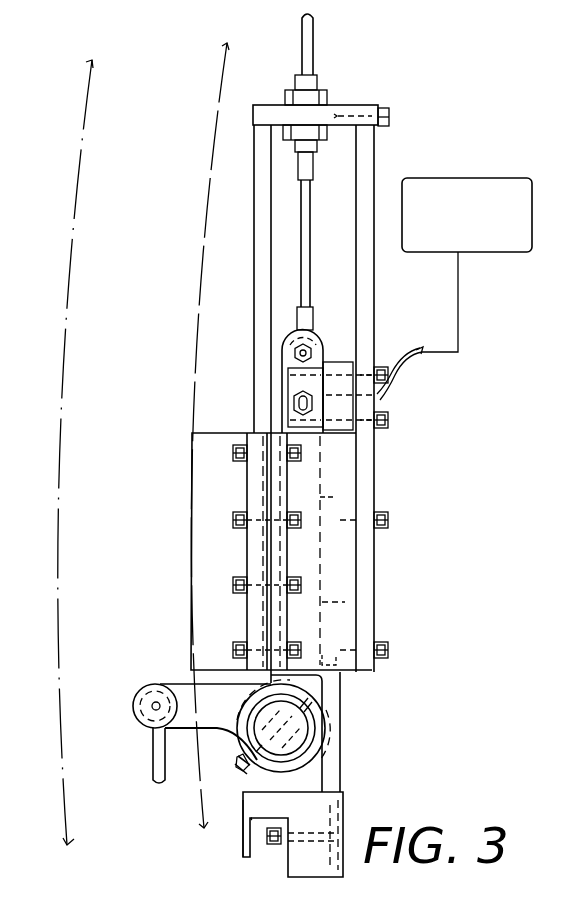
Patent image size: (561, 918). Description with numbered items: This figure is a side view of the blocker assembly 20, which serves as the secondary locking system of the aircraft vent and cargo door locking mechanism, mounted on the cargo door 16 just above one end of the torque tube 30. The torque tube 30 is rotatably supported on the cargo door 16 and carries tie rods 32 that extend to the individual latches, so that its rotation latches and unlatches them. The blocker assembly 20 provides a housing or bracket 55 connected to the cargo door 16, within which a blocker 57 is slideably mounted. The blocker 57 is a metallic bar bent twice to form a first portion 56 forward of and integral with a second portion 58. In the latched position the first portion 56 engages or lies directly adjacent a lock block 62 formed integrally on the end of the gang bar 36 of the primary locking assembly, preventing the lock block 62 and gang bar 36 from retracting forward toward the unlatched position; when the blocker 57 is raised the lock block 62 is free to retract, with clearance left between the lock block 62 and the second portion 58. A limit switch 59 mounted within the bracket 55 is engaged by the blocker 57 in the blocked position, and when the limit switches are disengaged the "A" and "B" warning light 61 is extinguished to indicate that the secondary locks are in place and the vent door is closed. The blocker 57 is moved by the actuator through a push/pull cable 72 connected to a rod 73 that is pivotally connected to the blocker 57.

The cargo door 16 is at (136, 455).
The blocker assembly 20 is at (424, 308).
The torque tube 30 is at (310, 774).
The tie rod 32 is at (153, 758).
The gang bar 36 is at (242, 828).
The housing or bracket 55 is at (372, 453).
The first portion 56 is at (304, 563).
The blocker 57 is at (324, 500).
The second portion 58 is at (340, 693).
The limit switch 59 is at (292, 400).
The "A" and "B" warning light 61 is at (428, 178).
The lock block 62 is at (312, 812).
The push/pull cable 72 is at (301, 48).
The rod 73 is at (300, 195).